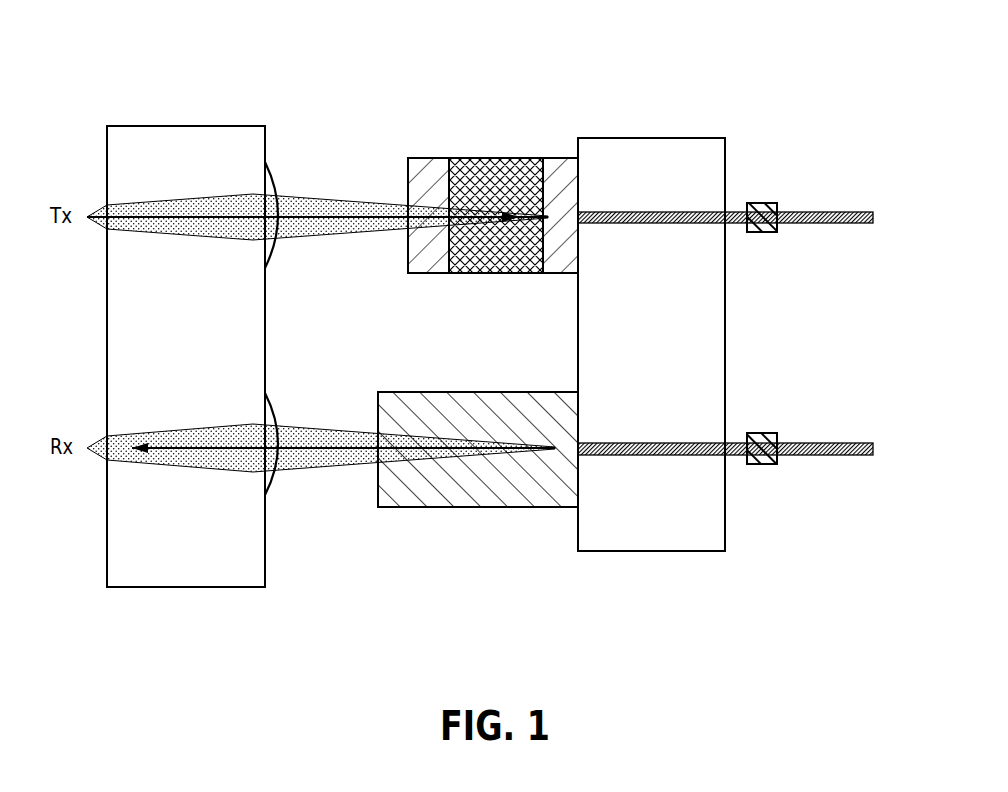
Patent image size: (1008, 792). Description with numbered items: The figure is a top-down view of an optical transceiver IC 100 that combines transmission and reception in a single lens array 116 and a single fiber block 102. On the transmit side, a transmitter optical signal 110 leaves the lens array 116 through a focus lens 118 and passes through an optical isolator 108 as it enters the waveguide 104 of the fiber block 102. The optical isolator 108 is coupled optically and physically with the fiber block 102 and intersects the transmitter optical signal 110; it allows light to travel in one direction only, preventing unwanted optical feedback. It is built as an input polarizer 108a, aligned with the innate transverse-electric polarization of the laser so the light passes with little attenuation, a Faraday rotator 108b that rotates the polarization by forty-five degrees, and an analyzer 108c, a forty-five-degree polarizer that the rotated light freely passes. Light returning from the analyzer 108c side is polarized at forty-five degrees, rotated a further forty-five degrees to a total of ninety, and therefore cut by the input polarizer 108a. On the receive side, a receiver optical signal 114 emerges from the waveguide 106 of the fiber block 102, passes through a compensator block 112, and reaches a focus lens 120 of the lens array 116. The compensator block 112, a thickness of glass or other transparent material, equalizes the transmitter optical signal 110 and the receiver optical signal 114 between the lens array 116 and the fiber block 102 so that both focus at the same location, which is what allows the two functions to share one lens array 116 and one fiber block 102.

The transceiver IC 100 is at (690, 52).
The fiber block 102 is at (698, 138).
The waveguide 104 is at (705, 212).
The waveguide 106 is at (700, 437).
The optical isolator 108 is at (512, 198).
The input polarizer 108a is at (428, 168).
The Faraday rotator 108b is at (487, 273).
The analyzer 108c is at (560, 167).
The transmitter optical signal 110 is at (345, 205).
The compensator block 112 is at (442, 508).
The receiver optical signal 114 is at (332, 458).
The lens array 116 is at (172, 126).
The focus lens 118 is at (277, 185).
The focus lens 120 is at (277, 412).